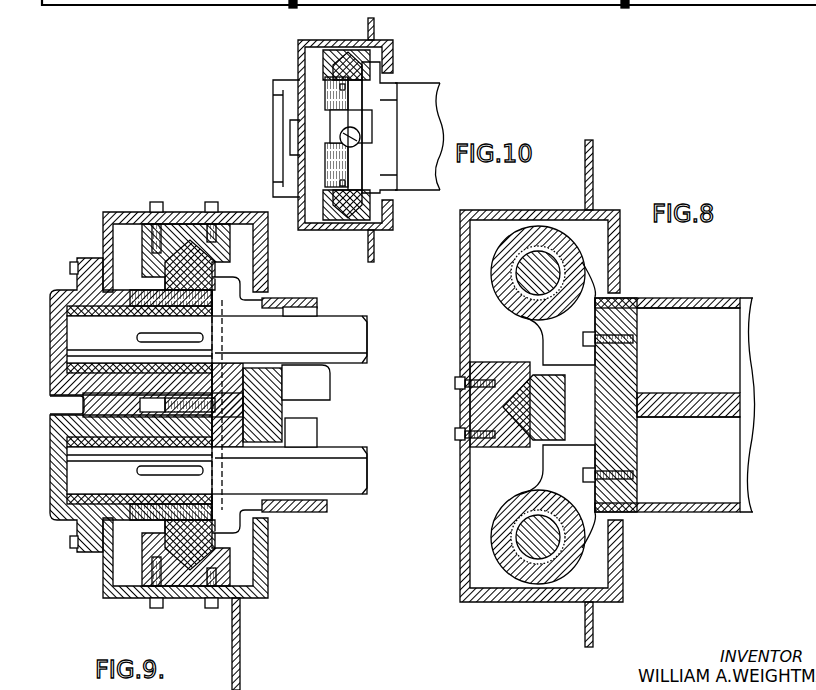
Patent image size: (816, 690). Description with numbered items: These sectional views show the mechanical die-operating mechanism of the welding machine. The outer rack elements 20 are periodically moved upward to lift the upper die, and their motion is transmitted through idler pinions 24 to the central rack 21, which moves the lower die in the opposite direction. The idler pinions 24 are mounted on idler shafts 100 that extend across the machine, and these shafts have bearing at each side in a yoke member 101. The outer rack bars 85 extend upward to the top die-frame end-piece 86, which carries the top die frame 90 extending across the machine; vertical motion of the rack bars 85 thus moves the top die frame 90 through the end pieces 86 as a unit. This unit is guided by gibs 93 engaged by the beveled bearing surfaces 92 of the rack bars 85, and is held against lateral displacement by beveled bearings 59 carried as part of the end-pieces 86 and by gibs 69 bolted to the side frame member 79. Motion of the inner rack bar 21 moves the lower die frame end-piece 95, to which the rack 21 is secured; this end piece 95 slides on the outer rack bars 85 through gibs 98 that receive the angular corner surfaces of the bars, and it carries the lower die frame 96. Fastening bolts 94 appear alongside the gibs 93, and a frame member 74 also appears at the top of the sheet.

In FIG. 9, the outer rack elements 20 is at (130, 213).
In FIG. 10, the outer rack elements 20 is at (348, 52).
In FIG. 9, the central rack 21 is at (140, 409).
In FIG. 10, the central rack 21 is at (338, 130).
In FIG. 9, the idler pinions 24 is at (106, 253).
In FIG. 10, the idler pinions 24 is at (330, 92).
In FIG. 8, the beveled bearings 59 is at (538, 365).
In FIG. 8, the gibs 69 is at (470, 412).
In FIG. 8, the frame member 74 is at (632, 8).
In FIG. 8, the side frame member 79 is at (460, 583).
In FIG. 8, the outer rack bars 85 is at (560, 278).
In FIG. 8, the top die-frame end-piece 86 is at (583, 502).
In FIG. 8, the top die frame 90 is at (712, 512).
In FIG. 9, the beveled bearing surfaces 92 is at (168, 248).
In FIG. 10, the beveled bearing surfaces 92 is at (335, 218).
In FIG. 9, the gibs 93 is at (182, 222).
In FIG. 10, the gibs 93 is at (298, 50).
In FIG. 9, the bolt 94 is at (200, 215).
In FIG. 10, the bolt 94 is at (362, 232).
In FIG. 9, the lower die frame end-piece 95 is at (317, 430).
In FIG. 10, the lower die frame end-piece 95 is at (388, 88).
In FIG. 9, the lower die frame 96 is at (312, 396).
In FIG. 10, the lower die frame 96 is at (440, 122).
In FIG. 9, the gibs 98 is at (250, 540).
In FIG. 10, the gibs 98 is at (390, 48).
In FIG. 9, the idler shafts 100 is at (340, 346).
In FIG. 9, the yoke member 101 is at (50, 292).
In FIG. 10, the yoke member 101 is at (280, 162).